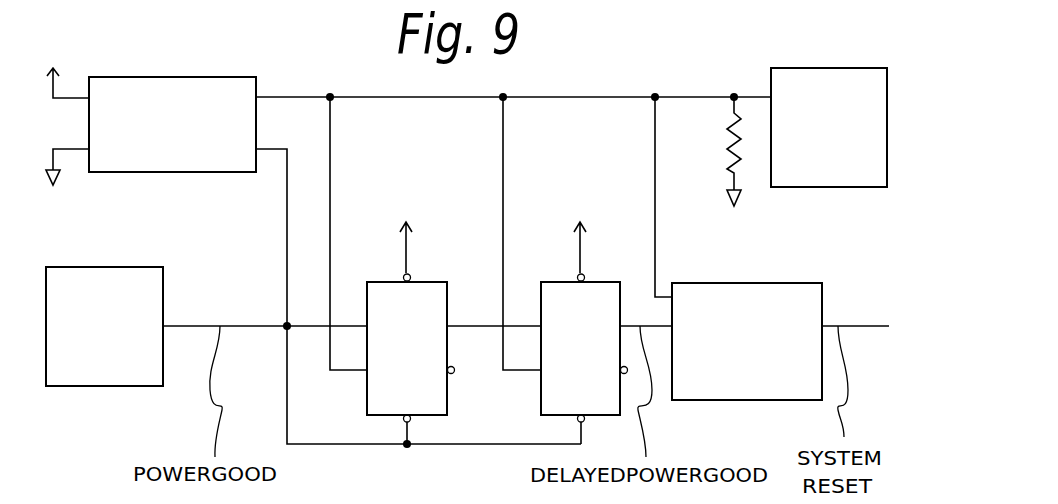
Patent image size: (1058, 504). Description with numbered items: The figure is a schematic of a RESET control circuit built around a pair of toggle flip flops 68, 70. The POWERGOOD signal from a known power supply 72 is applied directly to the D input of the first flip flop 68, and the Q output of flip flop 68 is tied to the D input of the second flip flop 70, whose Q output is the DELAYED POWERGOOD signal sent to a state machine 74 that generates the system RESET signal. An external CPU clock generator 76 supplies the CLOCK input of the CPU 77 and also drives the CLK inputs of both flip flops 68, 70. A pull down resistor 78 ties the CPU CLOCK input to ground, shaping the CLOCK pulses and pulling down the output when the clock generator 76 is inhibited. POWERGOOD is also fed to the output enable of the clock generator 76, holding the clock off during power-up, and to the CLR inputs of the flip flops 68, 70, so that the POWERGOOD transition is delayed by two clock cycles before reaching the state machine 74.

The first flip flop 68 is at (425, 282).
The second flip flop 70 is at (598, 282).
The power supply 72 is at (128, 267).
The state machine 74 is at (800, 283).
The external CPU clock generator 76 is at (182, 77).
The CPU 77 is at (842, 68).
The pull down resistor 78 is at (728, 140).